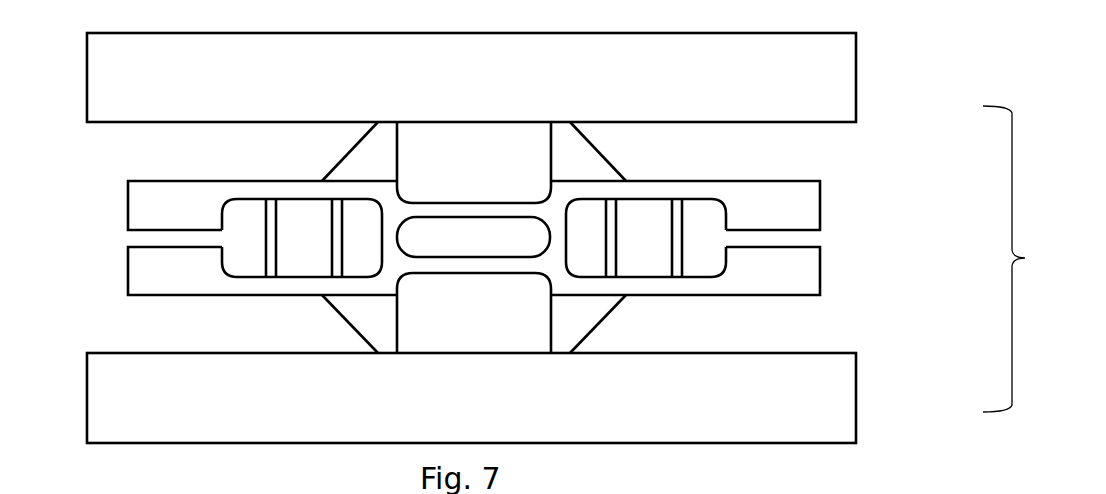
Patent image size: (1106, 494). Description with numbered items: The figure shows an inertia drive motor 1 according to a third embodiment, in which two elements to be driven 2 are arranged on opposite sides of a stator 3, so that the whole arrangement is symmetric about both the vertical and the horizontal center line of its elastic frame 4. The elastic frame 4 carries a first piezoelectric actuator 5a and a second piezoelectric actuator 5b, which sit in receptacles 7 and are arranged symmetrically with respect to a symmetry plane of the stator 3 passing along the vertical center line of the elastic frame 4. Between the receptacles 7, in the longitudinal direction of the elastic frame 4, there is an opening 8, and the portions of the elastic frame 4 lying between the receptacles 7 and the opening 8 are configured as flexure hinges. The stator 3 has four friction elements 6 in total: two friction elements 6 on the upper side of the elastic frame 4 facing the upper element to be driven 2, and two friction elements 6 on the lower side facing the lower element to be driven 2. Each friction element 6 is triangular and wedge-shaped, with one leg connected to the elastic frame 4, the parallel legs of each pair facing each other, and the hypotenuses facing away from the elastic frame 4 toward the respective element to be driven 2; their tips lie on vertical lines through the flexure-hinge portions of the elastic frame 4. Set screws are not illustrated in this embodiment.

The inertia drive motor 1 is at (1032, 258).
The element to be driven 2 is at (813, 60).
The stator 3 is at (546, 237).
The elastic frame 4 is at (790, 267).
The first piezoelectric actuator 5a is at (289, 212).
The second piezoelectric actuator 5b is at (638, 213).
The friction element 6 is at (380, 143).
The receptacle 7 is at (353, 237).
The opening 8 is at (461, 228).